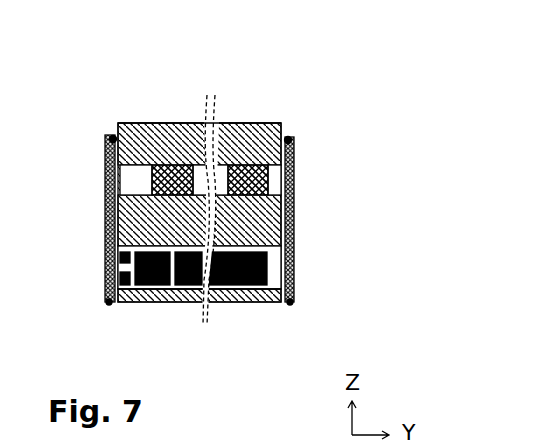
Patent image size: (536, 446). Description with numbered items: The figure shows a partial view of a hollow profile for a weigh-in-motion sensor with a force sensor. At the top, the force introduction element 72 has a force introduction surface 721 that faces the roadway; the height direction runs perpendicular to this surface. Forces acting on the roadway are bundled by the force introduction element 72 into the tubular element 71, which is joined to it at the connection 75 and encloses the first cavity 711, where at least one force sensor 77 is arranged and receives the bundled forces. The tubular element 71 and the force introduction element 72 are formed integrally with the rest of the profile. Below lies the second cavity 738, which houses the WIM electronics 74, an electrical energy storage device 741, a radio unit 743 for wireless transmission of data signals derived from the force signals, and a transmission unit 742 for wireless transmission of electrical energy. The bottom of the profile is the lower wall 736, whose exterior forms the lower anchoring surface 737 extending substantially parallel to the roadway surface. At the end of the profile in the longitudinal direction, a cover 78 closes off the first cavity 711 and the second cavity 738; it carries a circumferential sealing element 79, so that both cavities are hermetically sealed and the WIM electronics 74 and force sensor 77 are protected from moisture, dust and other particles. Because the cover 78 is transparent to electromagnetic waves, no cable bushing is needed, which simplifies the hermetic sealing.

The tubular element 71 is at (442, 59).
The force introduction element 72 is at (245, 102).
The connection 75 is at (284, 143).
The first cavity 711 is at (275, 181).
The force introduction surface 721 is at (252, 122).
The force sensor 77 is at (168, 175).
The cover 78 is at (108, 213).
The sealing element 79 is at (114, 138).
The WIM electronics 74 is at (162, 296).
The second cavity 738 is at (272, 276).
The radio unit 743 is at (120, 254).
The transmission unit 742 is at (122, 278).
The lower wall 736 is at (223, 298).
The lower anchoring surface 737 is at (222, 296).
The electrical energy storage device 741 is at (250, 298).